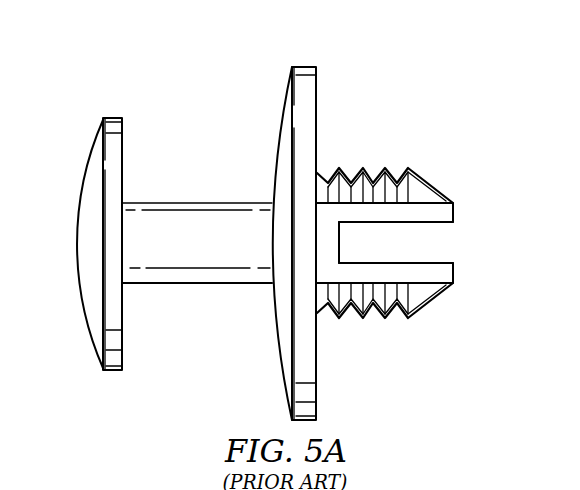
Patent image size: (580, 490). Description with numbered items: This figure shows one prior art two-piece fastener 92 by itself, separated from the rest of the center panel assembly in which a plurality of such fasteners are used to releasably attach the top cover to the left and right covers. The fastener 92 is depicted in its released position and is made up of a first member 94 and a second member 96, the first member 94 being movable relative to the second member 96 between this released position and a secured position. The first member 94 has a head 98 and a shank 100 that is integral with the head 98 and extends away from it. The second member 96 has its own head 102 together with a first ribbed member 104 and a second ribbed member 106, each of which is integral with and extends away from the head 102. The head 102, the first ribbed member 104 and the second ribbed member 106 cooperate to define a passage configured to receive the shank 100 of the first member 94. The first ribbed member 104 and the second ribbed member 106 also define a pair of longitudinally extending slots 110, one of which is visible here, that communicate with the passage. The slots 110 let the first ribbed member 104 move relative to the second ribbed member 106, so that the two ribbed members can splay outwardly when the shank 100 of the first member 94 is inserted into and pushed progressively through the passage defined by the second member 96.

The two-piece fastener 92 is at (505, 189).
The first member 94 is at (104, 96).
The second member 96 is at (406, 334).
The head 98 is at (75, 243).
The shank 100 is at (198, 202).
The head 102 is at (303, 65).
The first ribbed member 104 is at (375, 320).
The second ribbed member 106 is at (351, 167).
The longitudinally extending slot 110 is at (433, 263).